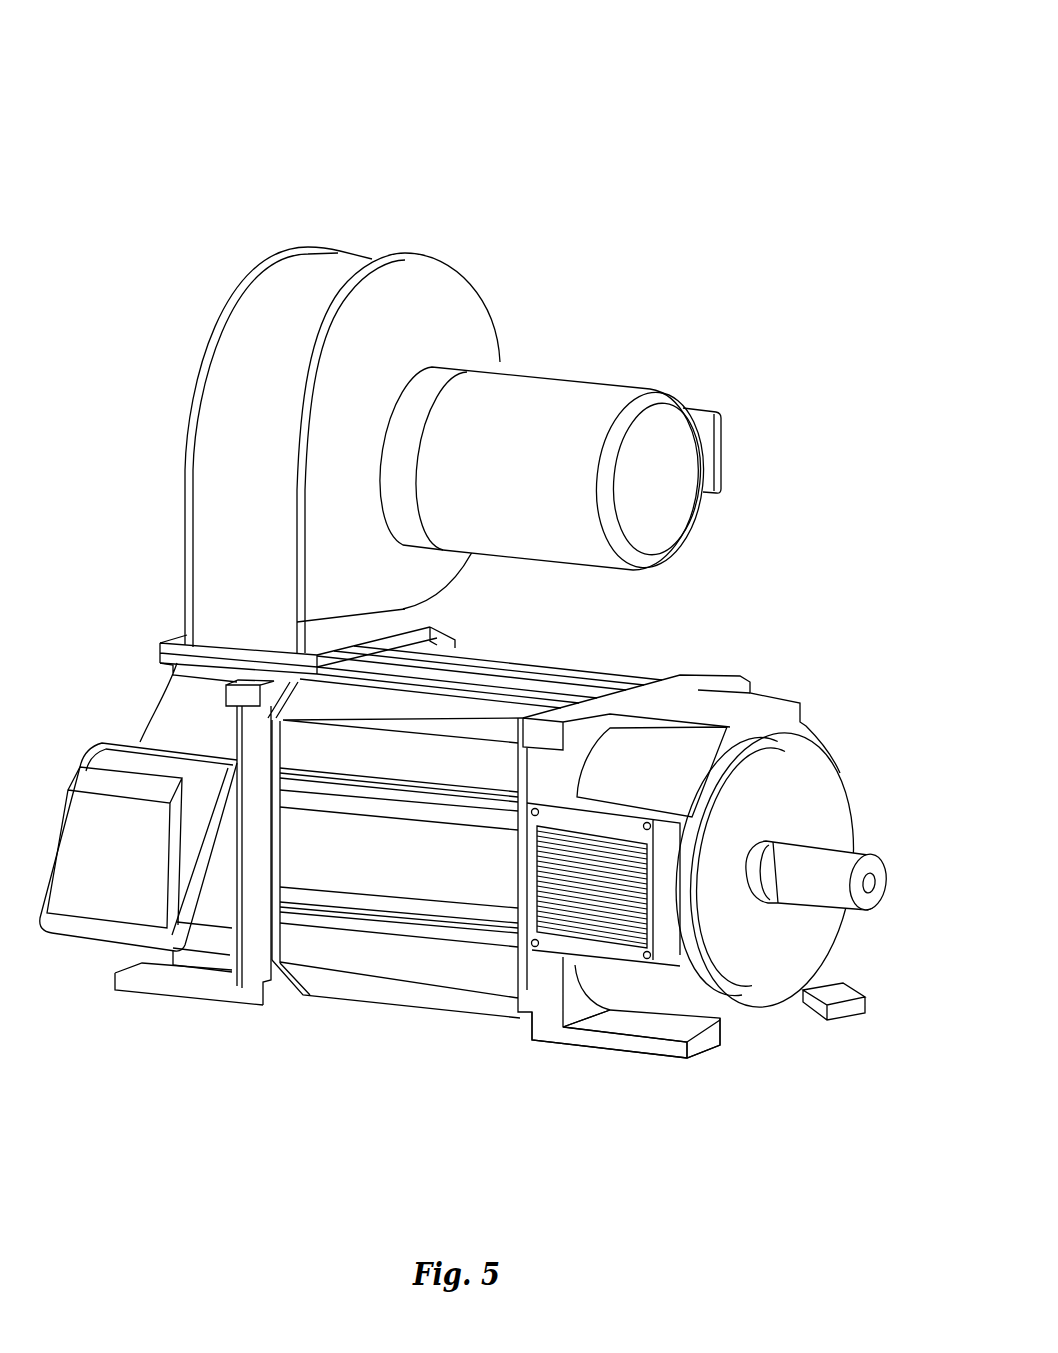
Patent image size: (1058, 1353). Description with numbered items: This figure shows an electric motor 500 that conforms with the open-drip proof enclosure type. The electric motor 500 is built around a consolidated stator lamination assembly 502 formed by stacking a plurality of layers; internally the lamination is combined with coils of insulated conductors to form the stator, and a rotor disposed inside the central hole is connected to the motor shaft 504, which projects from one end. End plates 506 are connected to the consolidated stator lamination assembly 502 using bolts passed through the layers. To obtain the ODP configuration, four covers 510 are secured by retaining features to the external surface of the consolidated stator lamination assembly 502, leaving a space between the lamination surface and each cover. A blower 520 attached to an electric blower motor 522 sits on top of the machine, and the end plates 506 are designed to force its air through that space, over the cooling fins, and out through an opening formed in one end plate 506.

The electric motor 500 is at (754, 63).
The blower 520 is at (483, 274).
The electric blower motor 522 is at (634, 384).
The consolidated stator lamination assembly 502 is at (599, 670).
The covers 510 is at (432, 737).
The end plates 506 is at (252, 1004).
The motor shaft 504 is at (882, 856).